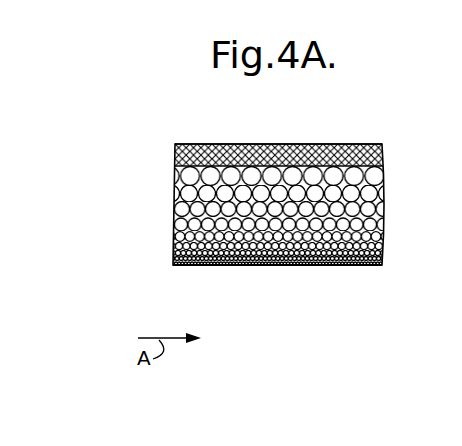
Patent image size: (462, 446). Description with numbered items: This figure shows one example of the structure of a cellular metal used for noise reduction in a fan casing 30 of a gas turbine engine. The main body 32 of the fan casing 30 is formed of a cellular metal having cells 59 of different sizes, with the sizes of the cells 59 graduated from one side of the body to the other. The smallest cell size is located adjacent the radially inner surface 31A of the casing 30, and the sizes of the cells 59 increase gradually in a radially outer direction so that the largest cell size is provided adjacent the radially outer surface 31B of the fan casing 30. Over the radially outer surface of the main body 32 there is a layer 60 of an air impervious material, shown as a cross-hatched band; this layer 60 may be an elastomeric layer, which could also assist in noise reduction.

The fan casing 30 is at (165, 248).
The radially inner surface 31A is at (317, 267).
The radially outer surface 31B is at (349, 163).
The main body 32 is at (211, 280).
The cells 59 is at (187, 193).
The layer of air impervious material 60 is at (213, 153).